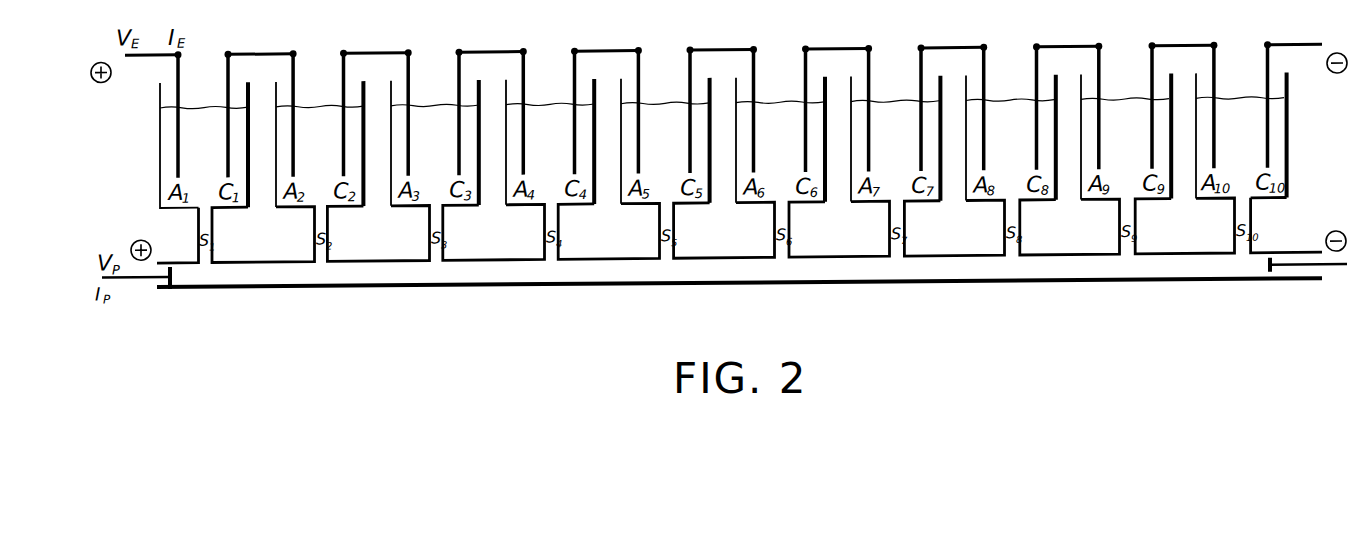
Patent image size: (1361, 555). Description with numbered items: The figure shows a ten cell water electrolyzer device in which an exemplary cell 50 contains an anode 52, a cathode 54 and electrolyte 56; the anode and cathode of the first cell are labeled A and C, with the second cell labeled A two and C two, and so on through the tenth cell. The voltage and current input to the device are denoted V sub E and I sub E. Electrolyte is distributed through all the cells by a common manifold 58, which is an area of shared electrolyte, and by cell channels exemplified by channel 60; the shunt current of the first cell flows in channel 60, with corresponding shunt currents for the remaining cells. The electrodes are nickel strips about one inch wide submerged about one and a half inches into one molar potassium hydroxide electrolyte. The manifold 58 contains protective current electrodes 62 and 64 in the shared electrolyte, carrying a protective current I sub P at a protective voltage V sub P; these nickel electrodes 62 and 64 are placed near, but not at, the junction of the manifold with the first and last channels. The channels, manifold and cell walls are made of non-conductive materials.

The cell 50 is at (160, 160).
The anode 52 is at (180, 73).
The cathode 54 is at (228, 75).
The electrolyte 56 is at (205, 163).
The common manifold 58 is at (256, 291).
The channel 60 is at (213, 228).
The protective current electrode 62 is at (137, 279).
The protective current electrode 64 is at (1337, 277).